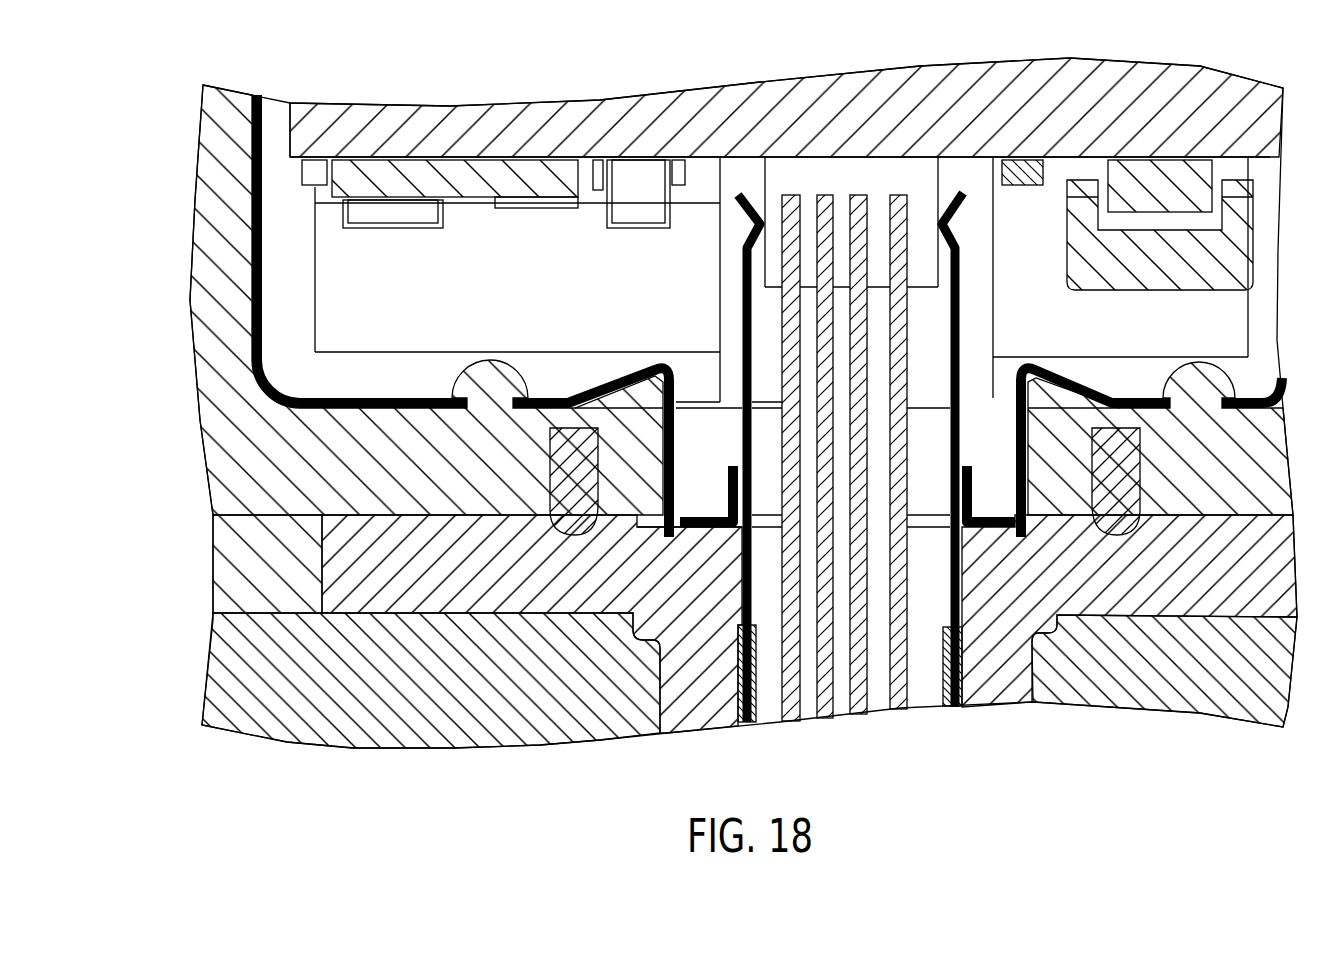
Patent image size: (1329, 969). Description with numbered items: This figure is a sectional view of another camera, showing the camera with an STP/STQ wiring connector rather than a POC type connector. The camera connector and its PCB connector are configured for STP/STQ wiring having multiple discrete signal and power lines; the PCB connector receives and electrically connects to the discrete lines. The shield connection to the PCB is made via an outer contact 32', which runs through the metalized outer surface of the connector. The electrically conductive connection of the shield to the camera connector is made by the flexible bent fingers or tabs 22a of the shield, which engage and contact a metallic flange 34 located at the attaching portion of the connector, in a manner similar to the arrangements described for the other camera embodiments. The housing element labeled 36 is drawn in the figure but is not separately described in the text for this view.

The outer contact 32' is at (690, 382).
The housing 36 is at (840, 168).
The flexible bent fingers or tabs 22a is at (663, 450).
The metallic flange 34 is at (698, 528).